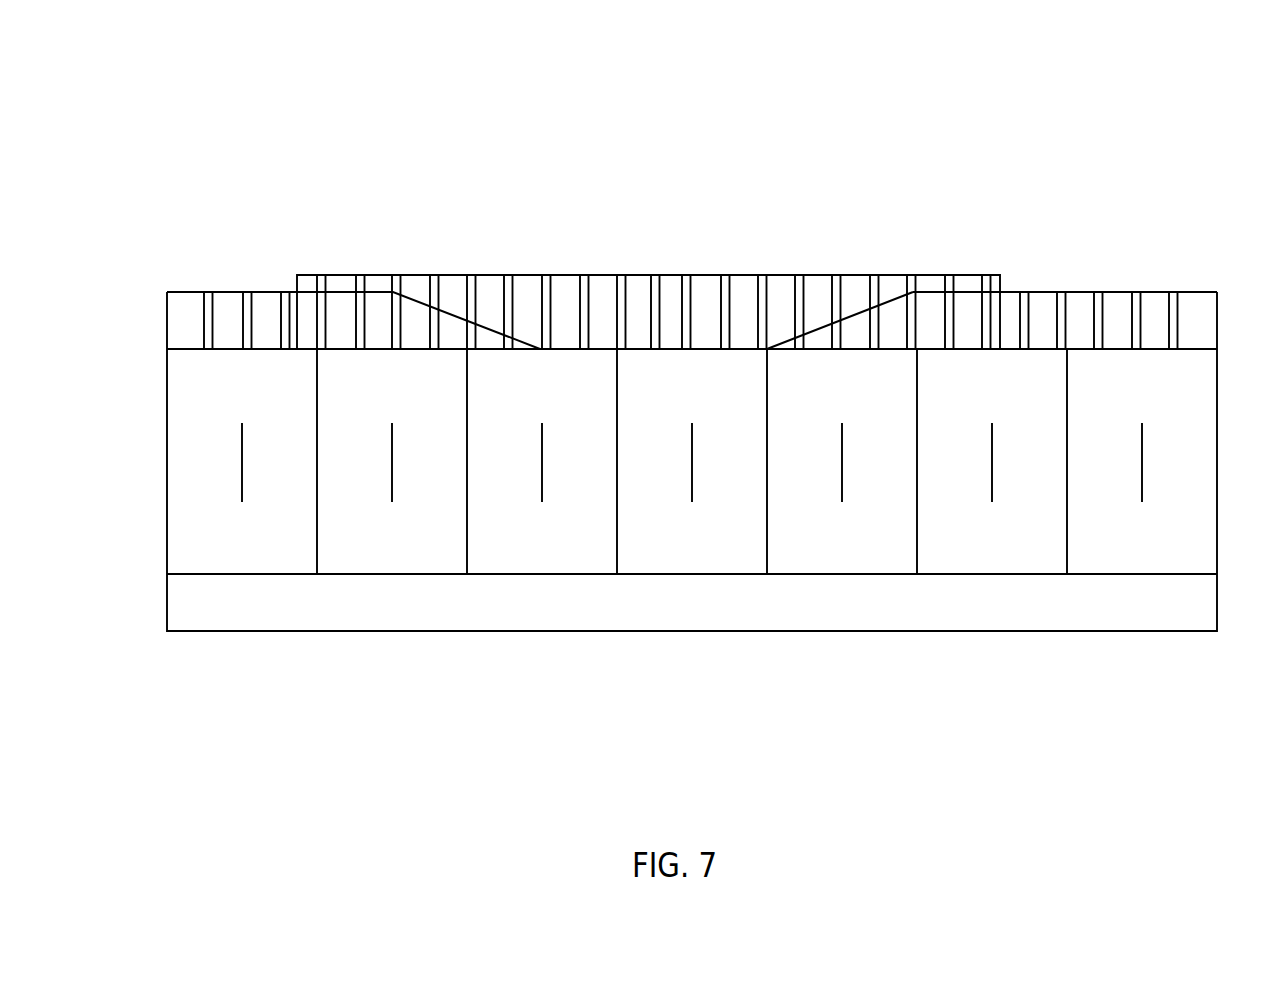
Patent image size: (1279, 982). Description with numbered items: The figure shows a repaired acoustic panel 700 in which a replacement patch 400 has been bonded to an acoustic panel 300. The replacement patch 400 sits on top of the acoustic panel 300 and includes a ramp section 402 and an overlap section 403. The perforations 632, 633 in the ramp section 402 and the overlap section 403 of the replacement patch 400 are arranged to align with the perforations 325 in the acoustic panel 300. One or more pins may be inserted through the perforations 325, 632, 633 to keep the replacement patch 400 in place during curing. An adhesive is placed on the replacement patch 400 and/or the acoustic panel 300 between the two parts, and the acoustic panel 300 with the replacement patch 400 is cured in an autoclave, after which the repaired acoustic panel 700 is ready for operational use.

The repaired acoustic panel 700 is at (1131, 127).
The acoustic panel 300 is at (166, 397).
The perforations 325 is at (428, 322).
The replacement patch 400 is at (738, 273).
The ramp section 402 is at (446, 220).
The overlap section 403 is at (336, 215).
The perforations 632 is at (477, 303).
The perforations 633 is at (317, 276).